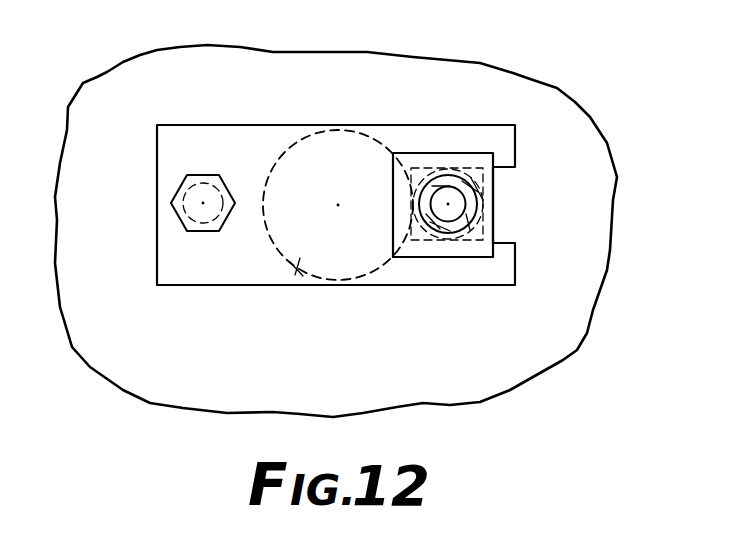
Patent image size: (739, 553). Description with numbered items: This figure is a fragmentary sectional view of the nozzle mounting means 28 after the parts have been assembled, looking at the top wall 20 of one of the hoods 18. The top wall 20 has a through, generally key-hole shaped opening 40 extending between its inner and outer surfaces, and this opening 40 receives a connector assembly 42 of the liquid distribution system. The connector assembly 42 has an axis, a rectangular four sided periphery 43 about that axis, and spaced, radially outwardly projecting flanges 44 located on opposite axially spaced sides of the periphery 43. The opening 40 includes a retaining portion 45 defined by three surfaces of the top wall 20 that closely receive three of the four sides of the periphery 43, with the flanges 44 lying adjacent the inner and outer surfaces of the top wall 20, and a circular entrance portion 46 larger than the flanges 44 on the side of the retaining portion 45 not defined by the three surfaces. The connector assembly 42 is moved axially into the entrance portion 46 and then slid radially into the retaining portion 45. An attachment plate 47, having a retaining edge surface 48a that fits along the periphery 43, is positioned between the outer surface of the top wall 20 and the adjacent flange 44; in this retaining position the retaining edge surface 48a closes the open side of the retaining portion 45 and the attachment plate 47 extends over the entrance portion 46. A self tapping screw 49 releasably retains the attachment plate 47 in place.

The hood 18 is at (556, 84).
The top wall 20 is at (588, 142).
The nozzle mounting means 28 is at (451, 178).
The key-hole shaped opening 40 is at (297, 288).
The connector assembly 42 is at (472, 197).
The rectangular four sided periphery 43 is at (421, 240).
The flanges 44 is at (486, 240).
The retaining portion 45 is at (472, 240).
The circular entrance portion 46 is at (323, 135).
The attachment plate 47 is at (500, 281).
The retaining edge surface 48a is at (422, 165).
The self tapping screw 49 is at (210, 176).